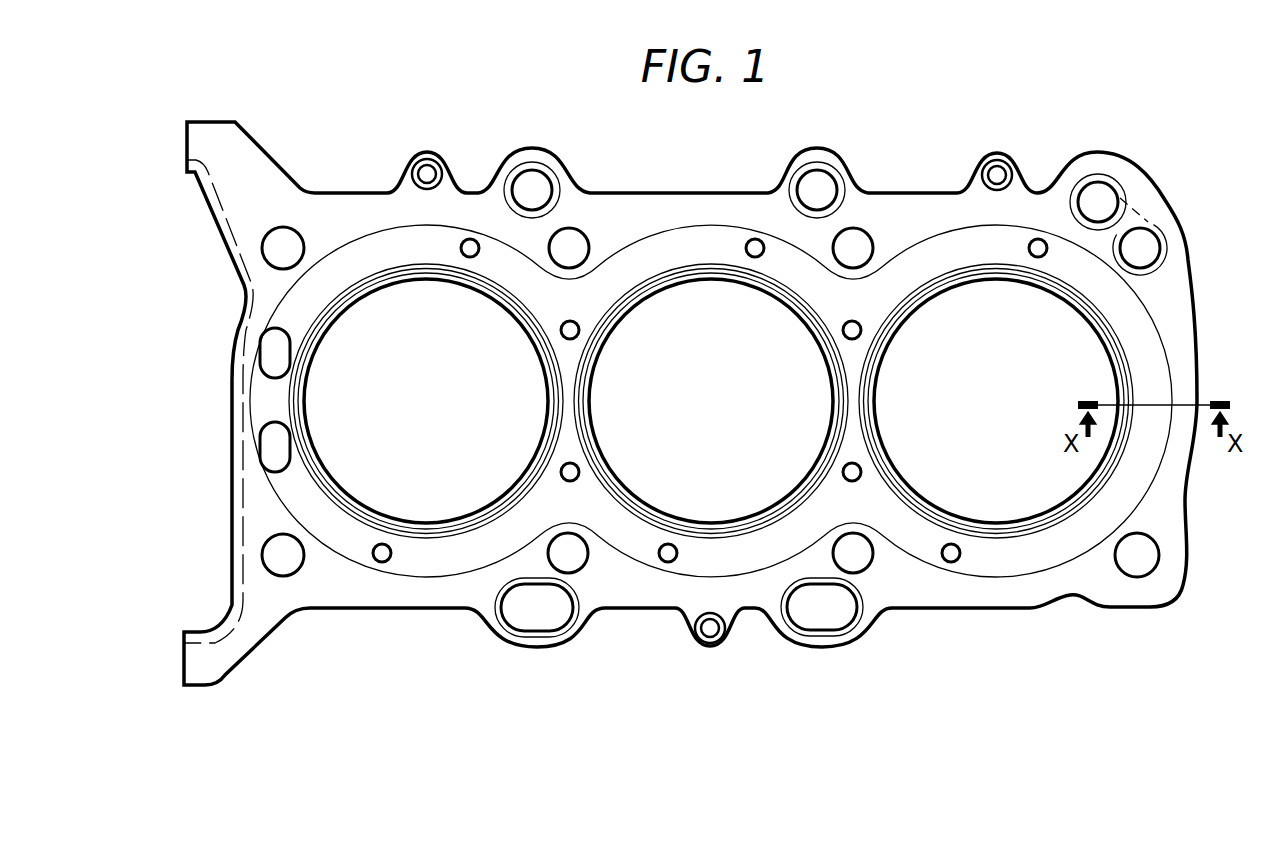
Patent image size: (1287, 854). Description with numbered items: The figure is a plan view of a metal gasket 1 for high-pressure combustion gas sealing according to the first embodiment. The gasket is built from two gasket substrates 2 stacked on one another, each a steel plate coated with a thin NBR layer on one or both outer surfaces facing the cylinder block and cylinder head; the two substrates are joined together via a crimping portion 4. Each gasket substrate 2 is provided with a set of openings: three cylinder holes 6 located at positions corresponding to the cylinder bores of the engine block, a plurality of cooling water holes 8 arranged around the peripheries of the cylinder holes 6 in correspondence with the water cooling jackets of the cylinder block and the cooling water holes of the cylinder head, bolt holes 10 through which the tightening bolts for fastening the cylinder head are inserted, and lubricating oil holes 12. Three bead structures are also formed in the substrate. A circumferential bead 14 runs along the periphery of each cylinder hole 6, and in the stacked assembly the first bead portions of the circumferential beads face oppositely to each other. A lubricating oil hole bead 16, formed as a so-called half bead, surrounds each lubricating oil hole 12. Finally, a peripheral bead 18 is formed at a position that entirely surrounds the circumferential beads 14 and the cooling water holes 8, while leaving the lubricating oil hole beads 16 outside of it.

The metal gasket 1 is at (1158, 172).
The gasket substrate 2 is at (1186, 270).
The crimping portion 4 is at (424, 160).
The cylinder hole 6 is at (358, 300).
The cooling water hole 8 is at (470, 258).
The bolt hole 10 is at (274, 242).
The lubricating oil hole 12 is at (548, 180).
The circumferential bead 14 is at (286, 398).
The lubricating oil hole bead 16 is at (532, 163).
The peripheral bead 18 is at (1165, 478).